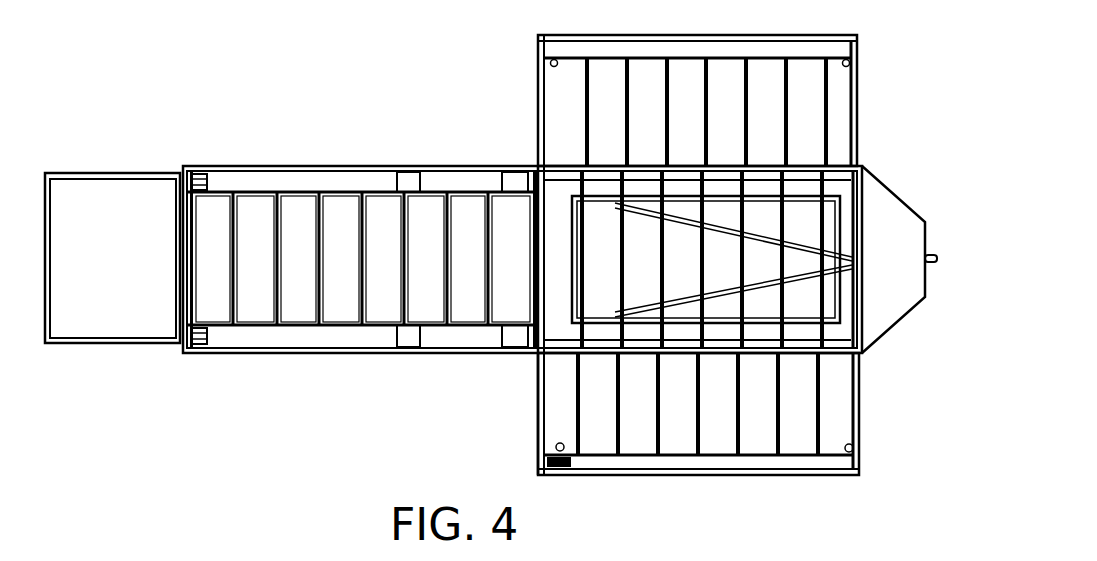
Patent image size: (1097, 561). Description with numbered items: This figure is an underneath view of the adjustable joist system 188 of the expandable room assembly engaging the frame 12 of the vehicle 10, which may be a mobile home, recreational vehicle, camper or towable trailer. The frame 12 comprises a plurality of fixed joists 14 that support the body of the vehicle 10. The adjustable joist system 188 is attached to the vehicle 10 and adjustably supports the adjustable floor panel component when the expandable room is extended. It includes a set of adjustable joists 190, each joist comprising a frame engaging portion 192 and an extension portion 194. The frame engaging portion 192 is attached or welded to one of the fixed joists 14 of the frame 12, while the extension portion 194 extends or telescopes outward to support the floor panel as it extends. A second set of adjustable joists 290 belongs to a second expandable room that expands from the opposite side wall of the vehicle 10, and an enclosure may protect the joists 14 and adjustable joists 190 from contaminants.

The vehicle 10 is at (329, 112).
The frame 12 is at (460, 366).
The fixed joists 14 is at (362, 307).
The adjustable joist system 188 is at (874, 128).
The set of adjustable joists 190 is at (874, 409).
The frame engaging portion 192 is at (714, 313).
The extension portion 194 is at (740, 427).
The second set of adjustable joists 290 is at (872, 78).